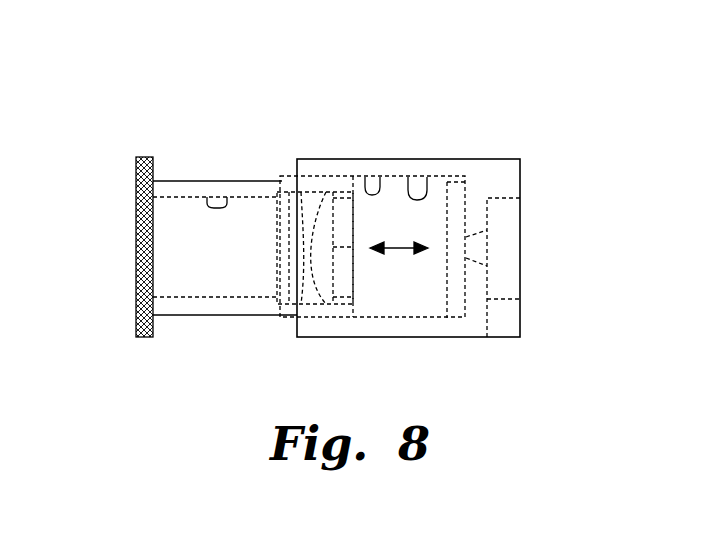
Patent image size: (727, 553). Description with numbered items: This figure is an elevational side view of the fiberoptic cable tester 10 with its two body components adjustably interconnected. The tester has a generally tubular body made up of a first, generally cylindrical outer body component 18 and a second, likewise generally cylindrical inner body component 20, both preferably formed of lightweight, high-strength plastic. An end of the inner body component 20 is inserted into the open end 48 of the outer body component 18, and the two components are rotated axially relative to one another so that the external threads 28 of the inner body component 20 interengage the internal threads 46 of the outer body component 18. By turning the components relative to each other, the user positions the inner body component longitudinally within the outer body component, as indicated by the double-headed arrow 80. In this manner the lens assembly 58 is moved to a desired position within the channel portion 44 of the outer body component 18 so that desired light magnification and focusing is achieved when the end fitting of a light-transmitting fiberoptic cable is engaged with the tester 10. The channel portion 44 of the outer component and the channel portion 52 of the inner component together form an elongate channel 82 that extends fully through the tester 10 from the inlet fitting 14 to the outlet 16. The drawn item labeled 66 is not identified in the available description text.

The fiberoptic cable tester 10 is at (302, 86).
The inlet fitting 14 is at (509, 258).
The outlet 16 is at (148, 246).
The first outer body component 18 is at (503, 159).
The second inner body component 20 is at (183, 179).
The external threads 28 is at (289, 176).
The channel portion 44 is at (378, 176).
The internal threads 46 is at (425, 176).
The open end 48 is at (297, 332).
The channel portion 52 is at (227, 196).
The lens assembly 58 is at (278, 248).
The inner lumen 66 is at (277, 300).
The double-headed arrow 80 is at (397, 250).
The elongate channel 82 is at (433, 298).